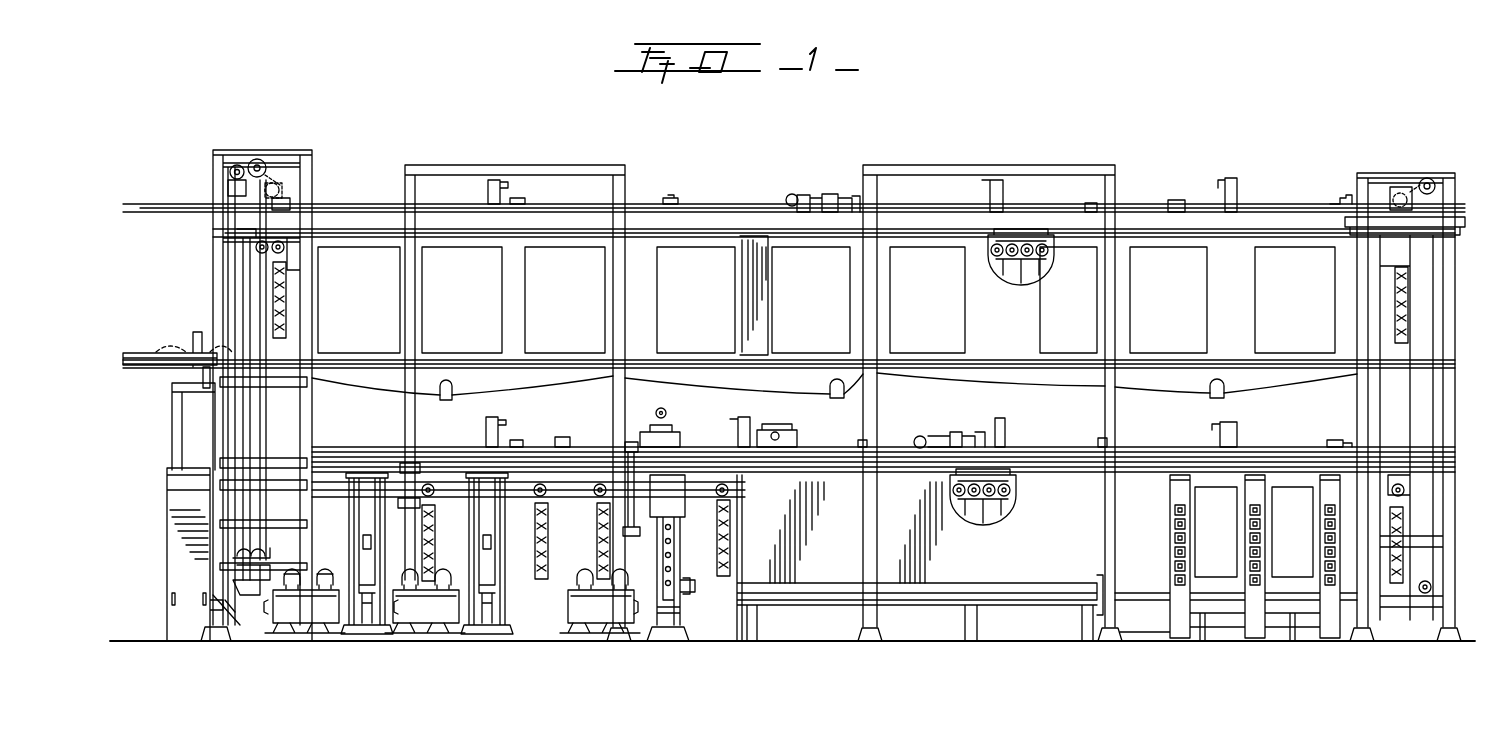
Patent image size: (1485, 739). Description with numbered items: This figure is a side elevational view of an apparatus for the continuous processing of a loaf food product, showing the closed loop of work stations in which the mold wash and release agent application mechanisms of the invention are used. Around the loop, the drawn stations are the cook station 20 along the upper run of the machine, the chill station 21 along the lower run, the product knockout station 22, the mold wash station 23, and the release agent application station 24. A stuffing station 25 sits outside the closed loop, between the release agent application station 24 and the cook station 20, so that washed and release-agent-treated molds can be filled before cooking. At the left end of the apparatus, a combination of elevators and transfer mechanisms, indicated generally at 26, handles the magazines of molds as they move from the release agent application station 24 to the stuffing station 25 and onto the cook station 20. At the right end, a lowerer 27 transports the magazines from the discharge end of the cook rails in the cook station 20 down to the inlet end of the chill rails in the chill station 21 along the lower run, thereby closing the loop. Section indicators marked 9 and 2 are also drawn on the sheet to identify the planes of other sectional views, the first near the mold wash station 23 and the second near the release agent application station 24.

The cook station 20 is at (744, 262).
The chill station 21 is at (1053, 565).
The product knockout station 22 is at (661, 620).
The mold wash station 23 is at (487, 612).
The release agent application station 24 is at (367, 612).
The stuffing station 25 is at (171, 524).
The elevators and transfer mechanisms 26 is at (285, 152).
The lowerer 27 is at (1394, 176).
The section line 9 is at (401, 390).
The section line 2 is at (521, 425).